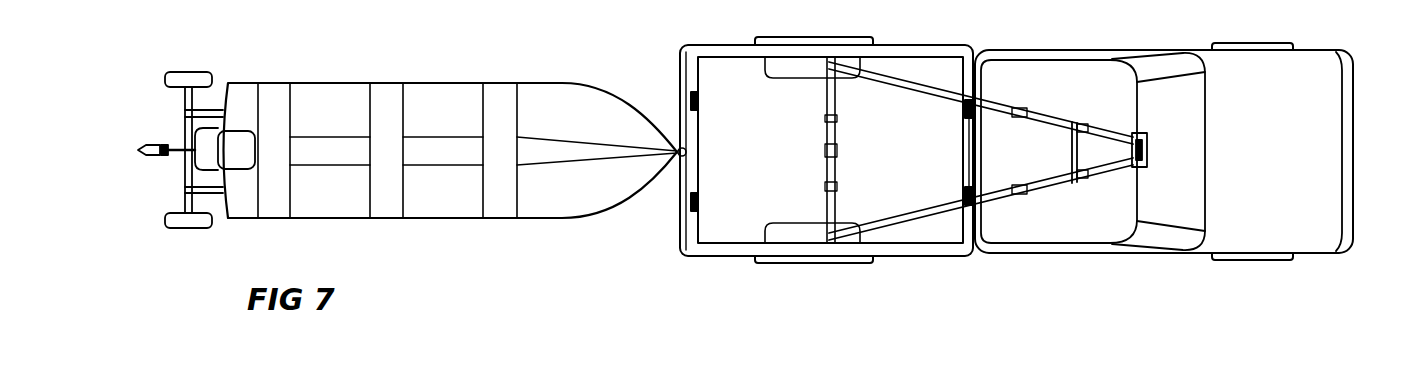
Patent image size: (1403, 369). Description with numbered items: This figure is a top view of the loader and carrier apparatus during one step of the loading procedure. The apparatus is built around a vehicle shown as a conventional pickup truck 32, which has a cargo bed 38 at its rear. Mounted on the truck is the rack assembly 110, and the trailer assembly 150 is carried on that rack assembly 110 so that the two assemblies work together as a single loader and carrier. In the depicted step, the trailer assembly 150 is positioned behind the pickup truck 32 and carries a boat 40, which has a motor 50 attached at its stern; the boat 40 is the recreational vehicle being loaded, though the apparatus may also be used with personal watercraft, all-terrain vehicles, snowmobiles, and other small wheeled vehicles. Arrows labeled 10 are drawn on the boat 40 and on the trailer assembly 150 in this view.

The forward direction arrow 10 is at (440, 150).
The pickup truck 32 is at (1308, 50).
The cargo bed 38 is at (893, 46).
The boat 40 is at (573, 84).
The motor 50 is at (240, 130).
The rack assembly 110 is at (896, 218).
The trailer assembly 150 is at (211, 111).